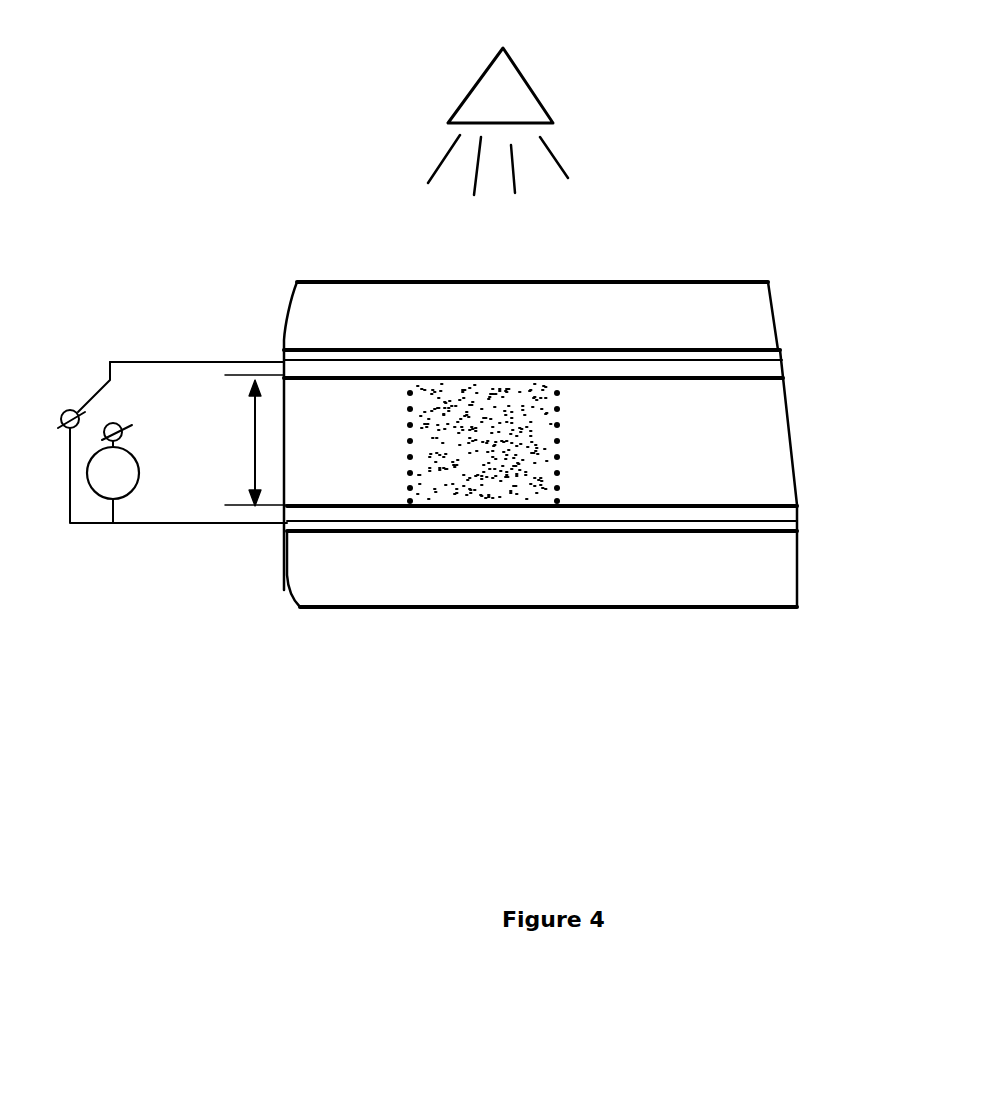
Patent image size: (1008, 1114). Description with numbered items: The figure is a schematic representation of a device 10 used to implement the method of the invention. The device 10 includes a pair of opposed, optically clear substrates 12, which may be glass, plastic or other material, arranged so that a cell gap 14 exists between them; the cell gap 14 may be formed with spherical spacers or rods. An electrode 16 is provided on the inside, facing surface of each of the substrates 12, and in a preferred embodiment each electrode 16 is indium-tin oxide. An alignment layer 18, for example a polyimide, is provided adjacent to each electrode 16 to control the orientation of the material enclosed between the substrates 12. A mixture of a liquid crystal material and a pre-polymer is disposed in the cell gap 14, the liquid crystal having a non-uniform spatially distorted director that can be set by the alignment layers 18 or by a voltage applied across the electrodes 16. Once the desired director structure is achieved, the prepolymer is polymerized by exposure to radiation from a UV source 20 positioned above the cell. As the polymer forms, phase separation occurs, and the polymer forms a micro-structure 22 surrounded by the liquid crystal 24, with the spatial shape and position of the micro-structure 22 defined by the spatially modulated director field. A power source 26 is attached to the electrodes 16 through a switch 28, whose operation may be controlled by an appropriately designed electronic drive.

The device 10 is at (718, 208).
The substrates 12 is at (722, 318).
The cell gap 14 is at (253, 440).
The electrode 16 is at (772, 354).
The alignment layer 18 is at (753, 367).
The UV source 20 is at (510, 90).
The micro-structure 22 is at (483, 478).
The liquid crystal 24 is at (348, 472).
The power source 26 is at (105, 487).
The switch 28 is at (90, 398).